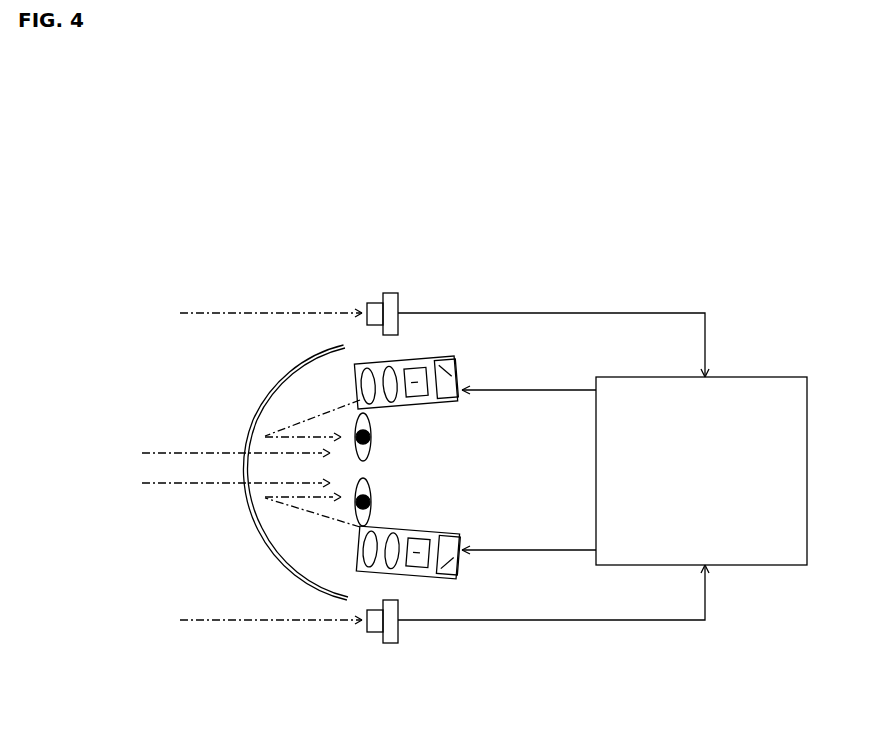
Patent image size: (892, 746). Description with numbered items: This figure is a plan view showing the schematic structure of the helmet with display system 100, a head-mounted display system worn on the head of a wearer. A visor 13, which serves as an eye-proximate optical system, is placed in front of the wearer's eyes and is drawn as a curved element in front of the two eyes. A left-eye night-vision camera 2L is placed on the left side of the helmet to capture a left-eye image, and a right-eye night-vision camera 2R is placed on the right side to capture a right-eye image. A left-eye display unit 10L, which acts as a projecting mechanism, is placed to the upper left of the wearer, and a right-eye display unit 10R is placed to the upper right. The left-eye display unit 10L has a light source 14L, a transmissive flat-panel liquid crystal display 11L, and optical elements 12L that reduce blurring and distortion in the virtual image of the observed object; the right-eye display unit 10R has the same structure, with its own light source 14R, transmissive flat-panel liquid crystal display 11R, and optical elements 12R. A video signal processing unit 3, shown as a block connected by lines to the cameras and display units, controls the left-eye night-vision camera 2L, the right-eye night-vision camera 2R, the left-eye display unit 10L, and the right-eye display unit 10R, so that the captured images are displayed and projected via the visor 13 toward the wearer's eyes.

The helmet with display system 100 is at (401, 157).
The right-eye night-vision camera 2R is at (394, 293).
The left-eye night-vision camera 2L is at (397, 632).
The video signal processing unit 3 is at (752, 377).
The right-eye display unit 10R is at (72, 260).
The left-eye display unit 10L is at (72, 548).
The transmissive flat-panel liquid crystal display 11R is at (343, 345).
The transmissive flat-panel liquid crystal display 11L is at (344, 597).
The optical elements 12R is at (364, 380).
The optical elements 12L is at (364, 553).
The light source 14R is at (435, 362).
The light source 14L is at (445, 565).
The visor 13 is at (252, 512).